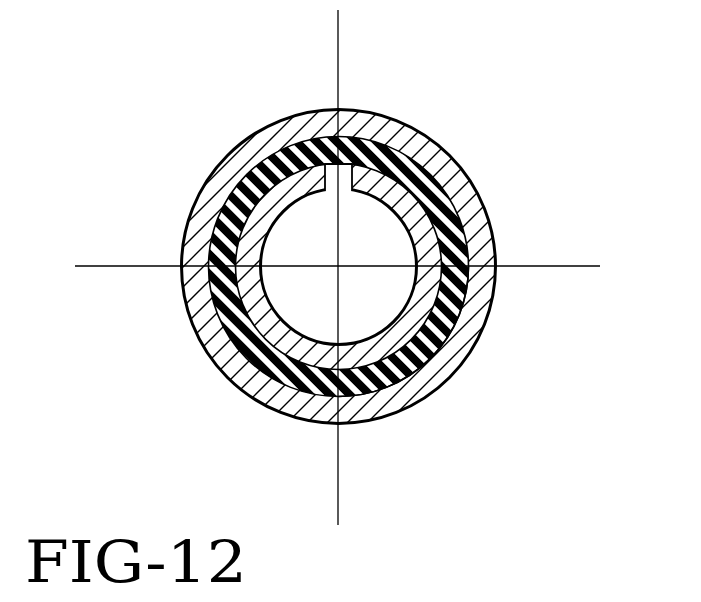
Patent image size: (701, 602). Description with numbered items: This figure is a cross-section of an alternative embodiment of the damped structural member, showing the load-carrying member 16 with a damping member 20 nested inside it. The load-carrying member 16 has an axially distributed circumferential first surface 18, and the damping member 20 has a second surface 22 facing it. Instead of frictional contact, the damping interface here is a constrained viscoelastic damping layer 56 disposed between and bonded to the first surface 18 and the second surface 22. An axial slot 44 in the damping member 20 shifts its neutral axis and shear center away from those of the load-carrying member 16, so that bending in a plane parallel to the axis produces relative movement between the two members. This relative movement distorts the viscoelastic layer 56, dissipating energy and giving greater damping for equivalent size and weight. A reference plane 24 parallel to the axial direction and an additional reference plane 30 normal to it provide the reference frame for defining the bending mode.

The load-carrying member 16 is at (440, 163).
The first surface 18 is at (388, 188).
The damping member 20 is at (363, 355).
The second surface 22 is at (457, 210).
The reference plane 24 is at (338, 73).
The additional reference plane 30 is at (562, 266).
The axial slot 44 is at (341, 189).
The constrained viscoelastic damping layer 56 is at (442, 332).